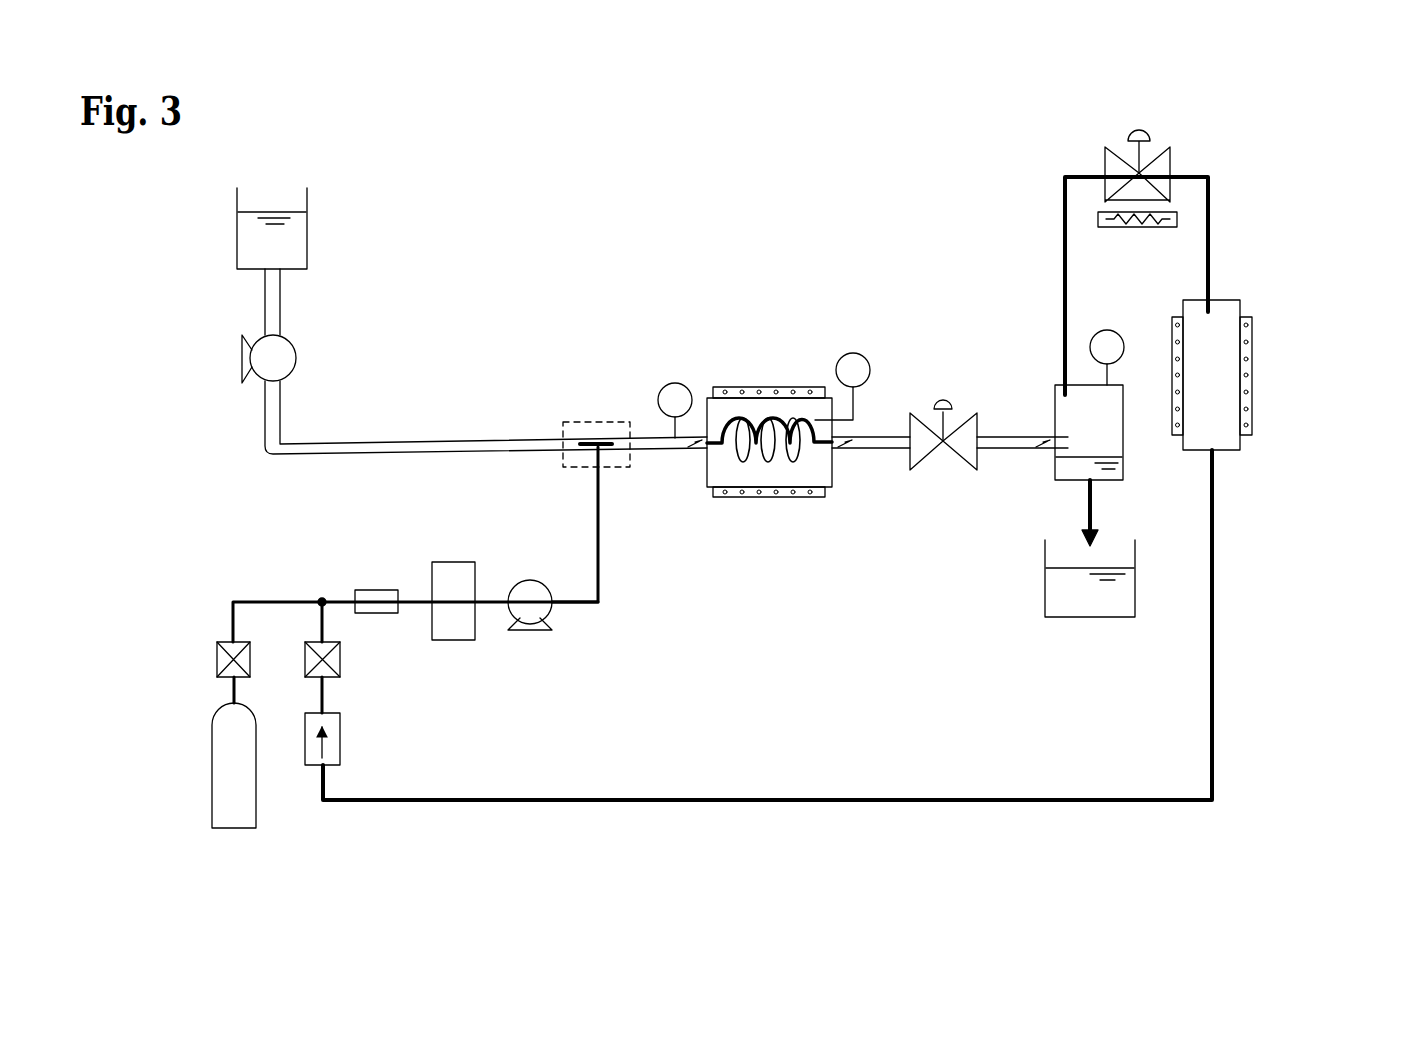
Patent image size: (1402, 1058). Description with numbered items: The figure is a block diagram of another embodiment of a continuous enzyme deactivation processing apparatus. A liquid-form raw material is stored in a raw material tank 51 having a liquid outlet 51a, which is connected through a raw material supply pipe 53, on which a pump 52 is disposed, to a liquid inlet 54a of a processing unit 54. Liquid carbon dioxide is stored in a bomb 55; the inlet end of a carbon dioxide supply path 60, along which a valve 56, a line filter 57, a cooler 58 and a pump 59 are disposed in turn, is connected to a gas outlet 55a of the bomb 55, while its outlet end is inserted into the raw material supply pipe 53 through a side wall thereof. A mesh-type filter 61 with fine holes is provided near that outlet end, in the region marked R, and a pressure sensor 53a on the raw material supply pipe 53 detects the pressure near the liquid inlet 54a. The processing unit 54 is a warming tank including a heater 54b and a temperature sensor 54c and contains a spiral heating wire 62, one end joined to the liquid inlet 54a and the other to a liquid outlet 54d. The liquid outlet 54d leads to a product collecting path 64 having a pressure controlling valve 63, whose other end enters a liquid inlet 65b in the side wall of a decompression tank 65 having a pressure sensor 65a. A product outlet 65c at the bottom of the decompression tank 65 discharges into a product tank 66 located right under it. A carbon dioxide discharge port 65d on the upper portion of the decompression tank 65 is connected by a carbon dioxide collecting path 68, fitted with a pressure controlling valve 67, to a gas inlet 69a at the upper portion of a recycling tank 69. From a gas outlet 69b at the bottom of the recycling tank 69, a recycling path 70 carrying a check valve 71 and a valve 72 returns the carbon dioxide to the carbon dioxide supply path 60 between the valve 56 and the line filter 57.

The raw material tank 51 is at (307, 203).
The liquid outlet 51a is at (276, 260).
The pump 52 is at (297, 353).
The raw material supply pipe 53 is at (495, 438).
The pressure sensor 53a is at (661, 383).
The processing unit 54 is at (776, 512).
The liquid inlet 54a is at (687, 452).
The heater 54b is at (787, 390).
The temperature sensor 54c is at (866, 353).
The liquid outlet 54d is at (855, 452).
The bomb 55 is at (237, 828).
The gas outlet 55a is at (224, 700).
The valve 56 is at (213, 637).
The line filter 57 is at (378, 590).
The cooler 58 is at (457, 640).
The pump 59 is at (537, 636).
The carbon dioxide supply path 60 is at (602, 578).
The mesh-type filter 61 is at (588, 436).
The reaction region R is at (568, 470).
The spiral heating wire 62 is at (753, 415).
The pressure controlling valve 63 is at (910, 413).
The product collecting path 64 is at (888, 449).
The decompression tank 65 is at (1020, 380).
The pressure sensor 65a is at (1108, 328).
The liquid inlet 65b is at (1038, 449).
The product outlet 65c is at (1098, 486).
The carbon dioxide discharge port 65d is at (1047, 380).
The product tank 66 is at (1045, 597).
The pressure controlling valve 67 is at (1172, 160).
The carbon dioxide collecting path 68 is at (1063, 248).
The recycling tank 69 is at (1237, 300).
The gas inlet 69a is at (1202, 305).
The gas outlet 69b is at (1208, 430).
The recycling path 70 is at (848, 797).
The check valve 71 is at (342, 737).
The valve 72 is at (342, 663).